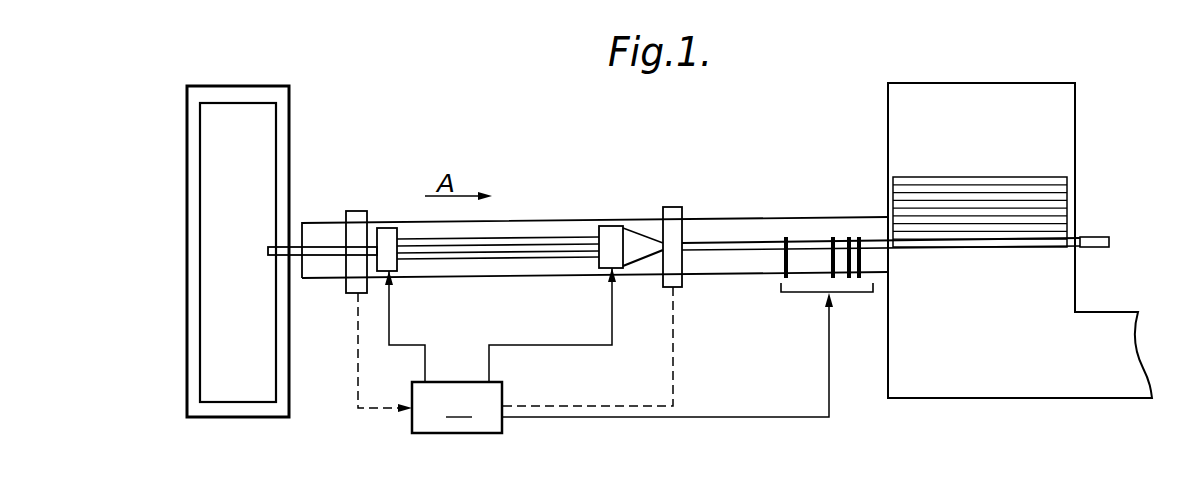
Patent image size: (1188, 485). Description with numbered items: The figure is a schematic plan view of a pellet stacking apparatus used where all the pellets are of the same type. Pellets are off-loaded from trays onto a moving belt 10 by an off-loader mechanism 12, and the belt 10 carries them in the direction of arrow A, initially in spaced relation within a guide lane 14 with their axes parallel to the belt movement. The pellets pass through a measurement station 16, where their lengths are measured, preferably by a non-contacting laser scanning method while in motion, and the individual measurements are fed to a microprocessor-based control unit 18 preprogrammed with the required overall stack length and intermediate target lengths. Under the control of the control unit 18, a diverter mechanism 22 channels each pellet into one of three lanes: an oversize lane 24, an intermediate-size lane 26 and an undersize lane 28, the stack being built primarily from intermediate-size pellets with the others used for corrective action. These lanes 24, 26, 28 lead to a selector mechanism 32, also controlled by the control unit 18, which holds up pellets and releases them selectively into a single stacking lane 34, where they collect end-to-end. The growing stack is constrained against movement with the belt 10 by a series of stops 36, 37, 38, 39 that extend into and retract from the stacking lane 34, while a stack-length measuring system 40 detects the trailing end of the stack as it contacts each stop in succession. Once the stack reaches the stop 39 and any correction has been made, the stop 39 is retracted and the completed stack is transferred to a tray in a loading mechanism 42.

The moving belt 10 is at (542, 226).
The off-loader mechanism 12 is at (222, 338).
The guide lane 14 is at (310, 250).
The measurement station 16 is at (360, 212).
The control unit 18 is at (609, 350).
The diverter mechanism 22 is at (387, 233).
The oversize lane 24 is at (487, 240).
The intermediate-size lane 26 is at (482, 249).
The undersize lane 28 is at (517, 258).
The selector mechanism 32 is at (608, 231).
The stacking lane 34 is at (744, 250).
The first stop 36 is at (785, 237).
The second stop 37 is at (833, 237).
The third stop 38 is at (848, 237).
The fourth stop 39 is at (860, 237).
The stack-length measuring system 40 is at (668, 218).
The loading mechanism 42 is at (1098, 134).